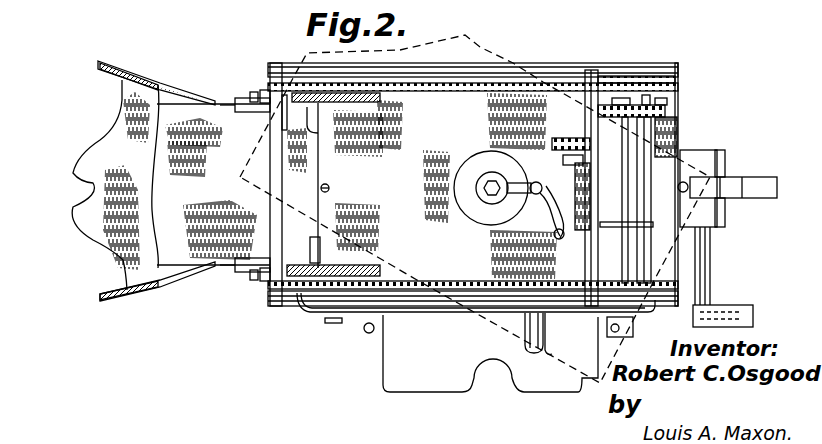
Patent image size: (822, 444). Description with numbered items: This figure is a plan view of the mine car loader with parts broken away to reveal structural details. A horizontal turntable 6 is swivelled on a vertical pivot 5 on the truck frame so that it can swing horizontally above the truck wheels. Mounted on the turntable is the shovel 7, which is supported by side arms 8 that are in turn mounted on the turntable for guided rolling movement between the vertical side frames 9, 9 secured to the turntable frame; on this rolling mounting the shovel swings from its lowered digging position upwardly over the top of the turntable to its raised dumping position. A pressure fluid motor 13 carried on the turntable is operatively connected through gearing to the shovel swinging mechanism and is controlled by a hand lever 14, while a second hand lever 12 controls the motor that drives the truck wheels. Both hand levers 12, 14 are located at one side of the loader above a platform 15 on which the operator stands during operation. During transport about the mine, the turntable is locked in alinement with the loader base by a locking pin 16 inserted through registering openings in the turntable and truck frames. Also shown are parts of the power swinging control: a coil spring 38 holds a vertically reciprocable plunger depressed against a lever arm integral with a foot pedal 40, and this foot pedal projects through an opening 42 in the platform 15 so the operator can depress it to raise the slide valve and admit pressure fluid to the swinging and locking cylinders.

The vertical pivot 5 is at (491, 193).
The horizontal turntable 6 is at (513, 100).
The shovel 7 is at (100, 147).
The side arms 8 is at (245, 97).
The vertical side frames 9 is at (480, 64).
The hand lever 12 is at (362, 332).
The pressure fluid motor 13 is at (653, 165).
The hand lever 14 is at (633, 335).
The platform 15 is at (467, 383).
The locking pin 16 is at (330, 185).
The coil spring 38 is at (475, 191).
The foot pedal 40 is at (525, 400).
The opening 42 is at (551, 357).